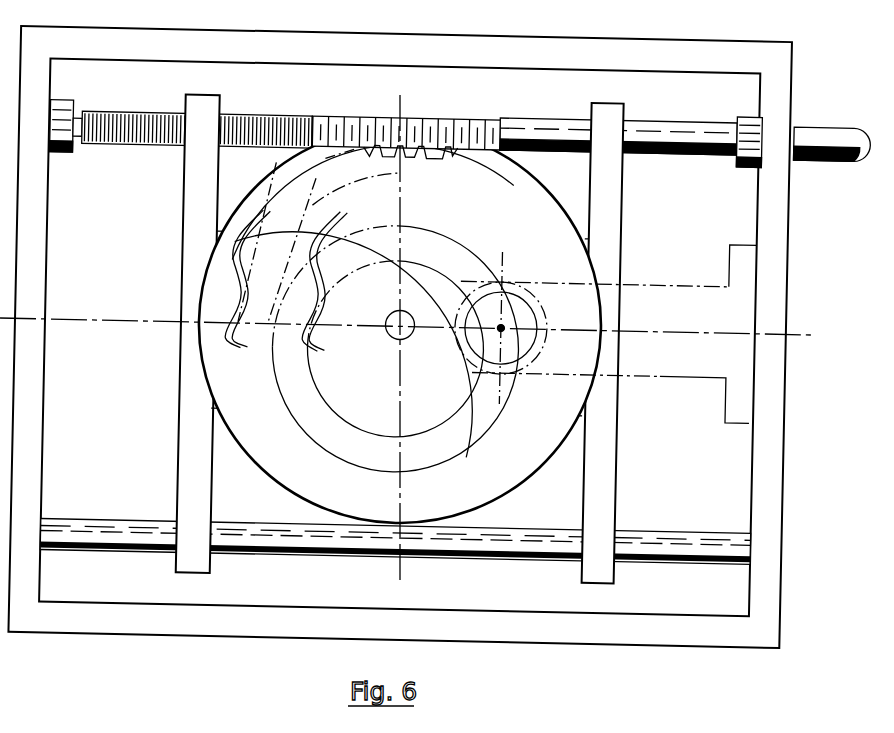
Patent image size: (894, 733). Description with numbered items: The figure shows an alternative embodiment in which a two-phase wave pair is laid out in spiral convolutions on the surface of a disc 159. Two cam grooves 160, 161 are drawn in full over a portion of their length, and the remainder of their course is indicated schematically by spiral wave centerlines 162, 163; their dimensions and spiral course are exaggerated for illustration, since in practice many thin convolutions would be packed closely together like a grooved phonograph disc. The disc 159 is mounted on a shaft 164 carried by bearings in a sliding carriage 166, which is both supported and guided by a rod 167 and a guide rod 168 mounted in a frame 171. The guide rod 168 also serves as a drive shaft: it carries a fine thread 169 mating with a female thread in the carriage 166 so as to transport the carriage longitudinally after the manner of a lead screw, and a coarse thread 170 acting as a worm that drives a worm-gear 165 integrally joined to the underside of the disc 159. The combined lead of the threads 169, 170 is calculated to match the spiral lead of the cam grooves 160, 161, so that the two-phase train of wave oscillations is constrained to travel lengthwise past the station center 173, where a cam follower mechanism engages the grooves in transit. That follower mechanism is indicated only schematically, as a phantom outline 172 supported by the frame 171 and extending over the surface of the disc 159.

The disc 159 is at (511, 484).
The cam groove 160 is at (240, 254).
The cam groove 161 is at (284, 291).
The spiral wave centerline 162 is at (253, 378).
The spiral wave centerline 163 is at (298, 386).
The shaft 164 is at (406, 336).
The worm-gear 165 is at (431, 152).
The sliding carriage 166 is at (627, 232).
The rod 167 is at (669, 526).
The guide rod 168 is at (812, 127).
The fine thread 169 is at (221, 110).
The coarse thread 170 is at (430, 118).
The frame 171 is at (785, 449).
The phantom outline 172 is at (668, 381).
The station center 173 is at (520, 344).